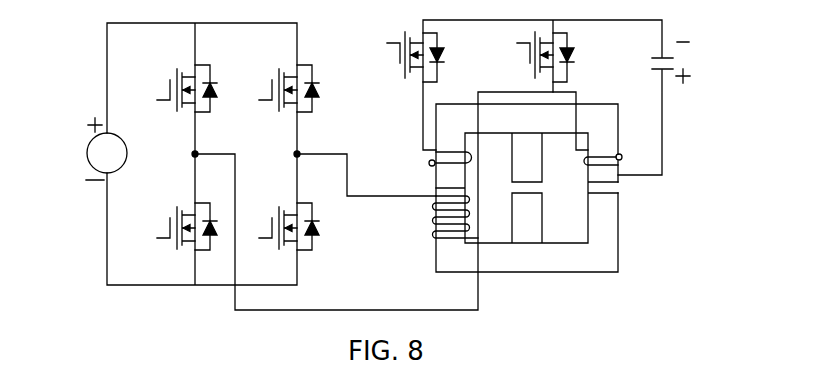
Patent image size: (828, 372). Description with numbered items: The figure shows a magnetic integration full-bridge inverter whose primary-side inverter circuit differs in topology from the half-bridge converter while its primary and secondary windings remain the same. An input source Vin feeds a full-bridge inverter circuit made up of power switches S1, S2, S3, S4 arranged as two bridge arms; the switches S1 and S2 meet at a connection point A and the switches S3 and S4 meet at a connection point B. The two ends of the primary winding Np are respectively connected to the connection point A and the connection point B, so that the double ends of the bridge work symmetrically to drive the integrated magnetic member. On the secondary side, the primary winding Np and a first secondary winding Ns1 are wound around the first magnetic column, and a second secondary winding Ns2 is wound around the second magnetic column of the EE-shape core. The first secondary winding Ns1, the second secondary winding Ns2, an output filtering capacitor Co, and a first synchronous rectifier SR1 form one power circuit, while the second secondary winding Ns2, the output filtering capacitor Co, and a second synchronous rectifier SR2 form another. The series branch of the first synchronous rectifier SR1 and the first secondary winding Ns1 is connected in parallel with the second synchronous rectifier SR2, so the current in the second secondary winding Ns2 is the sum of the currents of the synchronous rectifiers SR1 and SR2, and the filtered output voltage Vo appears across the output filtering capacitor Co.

The input voltage source Vin is at (86, 149).
The power switch diode S1 is at (179, 88).
The power switch diode S2 is at (179, 226).
The primary switch S3 is at (281, 88).
The primary switch S4 is at (281, 226).
The connection point A is at (207, 144).
The connection point B is at (311, 142).
The first synchronous rectifier SR1 is at (402, 61).
The second synchronous rectifier SR2 is at (530, 61).
The first secondary winding Ns1 is at (429, 161).
The second secondary winding Ns2 is at (620, 156).
The primary winding Np is at (435, 217).
The output filtering capacitor Co is at (644, 66).
The output voltage Vo is at (701, 62).